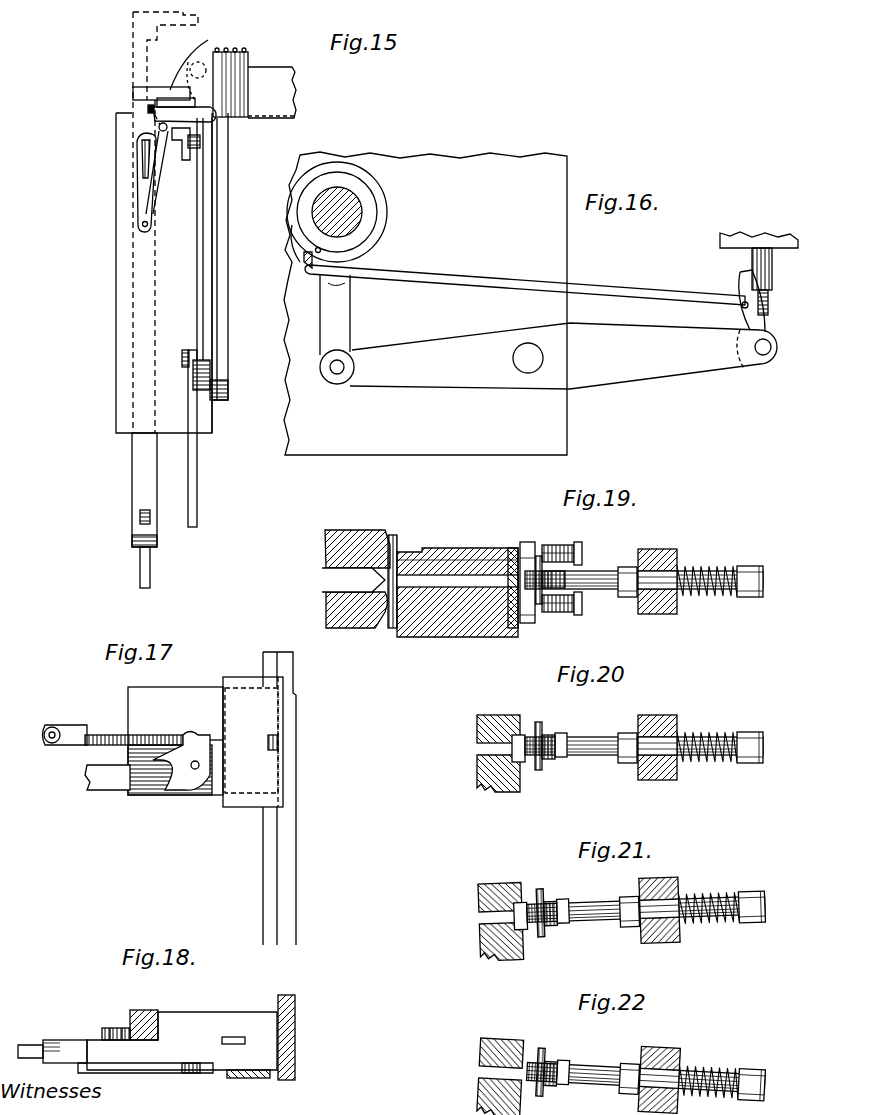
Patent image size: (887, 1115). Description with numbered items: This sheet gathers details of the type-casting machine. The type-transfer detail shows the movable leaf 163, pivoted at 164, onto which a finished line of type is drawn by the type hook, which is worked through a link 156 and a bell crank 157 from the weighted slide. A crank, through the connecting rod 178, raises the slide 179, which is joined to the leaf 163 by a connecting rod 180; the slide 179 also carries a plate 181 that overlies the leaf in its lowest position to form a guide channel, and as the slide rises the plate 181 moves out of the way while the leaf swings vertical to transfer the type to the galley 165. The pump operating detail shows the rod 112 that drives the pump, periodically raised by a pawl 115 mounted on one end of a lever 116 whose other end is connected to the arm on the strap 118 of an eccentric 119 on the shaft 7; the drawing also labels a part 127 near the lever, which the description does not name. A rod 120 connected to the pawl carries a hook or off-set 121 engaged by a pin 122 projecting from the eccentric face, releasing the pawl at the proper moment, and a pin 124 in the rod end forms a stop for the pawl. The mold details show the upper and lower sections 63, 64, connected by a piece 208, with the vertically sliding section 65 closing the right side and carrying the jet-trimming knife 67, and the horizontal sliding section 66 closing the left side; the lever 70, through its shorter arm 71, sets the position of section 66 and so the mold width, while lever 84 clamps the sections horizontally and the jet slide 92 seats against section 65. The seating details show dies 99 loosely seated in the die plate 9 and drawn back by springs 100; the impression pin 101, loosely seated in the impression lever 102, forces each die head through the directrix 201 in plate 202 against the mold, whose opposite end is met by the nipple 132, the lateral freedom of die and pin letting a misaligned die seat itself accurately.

In FIG. 16, the shaft 7 is at (352, 200).
In FIG. 19, the die plate 9 is at (531, 566).
In FIG. 20, the die plate 9 is at (538, 729).
In FIG. 21, the die plate 9 is at (540, 898).
In FIG. 22, the die plate 9 is at (538, 1055).
In FIG. 17, the upper section of the mold 63 is at (175, 741).
In FIG. 17, the lower section of the mold 64 is at (217, 795).
In FIG. 19, the vertically sliding section 65 is at (510, 560).
In FIG. 17, the vertically sliding section 65 is at (290, 748).
In FIG. 18, the vertically sliding section 65 is at (296, 1070).
In FIG. 19, the horizontal sliding section 66 is at (470, 637).
In FIG. 17, the horizontal sliding section 66 is at (208, 740).
In FIG. 18, the horizontal sliding section 66 is at (182, 1041).
In FIG. 17, the knife 67 is at (293, 673).
In FIG. 17, the lever 70 is at (147, 761).
In FIG. 18, the lever 70 is at (165, 1073).
In FIG. 17, the shorter arm 71 is at (183, 737).
In FIG. 18, the lever 84 is at (102, 1028).
In FIG. 19, the jet slide 92 is at (390, 625).
In FIG. 19, the dies 99 is at (579, 550).
In FIG. 20, the dies 99 is at (574, 728).
In FIG. 21, the dies 99 is at (578, 896).
In FIG. 22, the dies 99 is at (576, 1054).
In FIG. 19, the springs 100 is at (571, 615).
In FIG. 20, the springs 100 is at (561, 759).
In FIG. 21, the springs 100 is at (566, 924).
In FIG. 22, the springs 100 is at (565, 1087).
In FIG. 19, the impression pin 101 is at (644, 564).
In FIG. 20, the impression pin 101 is at (644, 732).
In FIG. 21, the impression pin 101 is at (647, 920).
In FIG. 22, the impression pin 101 is at (646, 1068).
In FIG. 19, the impression lever 102 is at (672, 555).
In FIG. 20, the impression lever 102 is at (672, 726).
In FIG. 21, the impression lever 102 is at (686, 891).
In FIG. 22, the impression lever 102 is at (680, 1062).
In FIG. 16, the rod 112 is at (752, 260).
In FIG. 16, the pawl 115 is at (738, 312).
In FIG. 16, the lever 116 is at (563, 356).
In FIG. 16, the strap 118 is at (390, 224).
In FIG. 16, the eccentric 119 is at (374, 244).
In FIG. 16, the rod 120 is at (585, 290).
In FIG. 16, the hook or off-set 121 is at (308, 270).
In FIG. 16, the pin 122 is at (300, 238).
In FIG. 16, the pin 124 is at (779, 300).
In FIG. 16, the arm 127 is at (350, 317).
In FIG. 19, the nipple 132 is at (350, 540).
In FIG. 15, the link 156 is at (197, 460).
In FIG. 15, the bell crank 157 is at (197, 292).
In FIG. 15, the leaf 163 is at (190, 150).
In FIG. 15, the pivot 164 is at (218, 118).
In FIG. 15, the galley 165 is at (254, 83).
In FIG. 15, the connecting rod 178 is at (150, 560).
In FIG. 15, the slide 179 is at (133, 96).
In FIG. 15, the connecting rod 180 is at (140, 178).
In FIG. 15, the plate 181 is at (205, 45).
In FIG. 20, the directrix 201 is at (539, 771).
In FIG. 21, the directrix 201 is at (536, 934).
In FIG. 17, the directrix 201 is at (268, 740).
In FIG. 20, the plate 202 is at (501, 727).
In FIG. 21, the plate 202 is at (499, 901).
In FIG. 22, the plate 202 is at (494, 1058).
In FIG. 17, the plate 202 is at (253, 742).
In FIG. 18, the plate 202 is at (250, 1078).
In FIG. 18, the piece 208 is at (143, 1012).